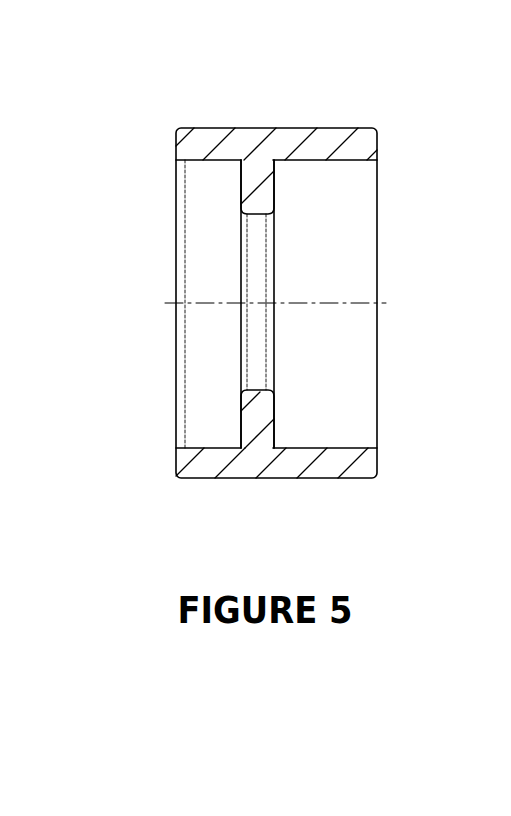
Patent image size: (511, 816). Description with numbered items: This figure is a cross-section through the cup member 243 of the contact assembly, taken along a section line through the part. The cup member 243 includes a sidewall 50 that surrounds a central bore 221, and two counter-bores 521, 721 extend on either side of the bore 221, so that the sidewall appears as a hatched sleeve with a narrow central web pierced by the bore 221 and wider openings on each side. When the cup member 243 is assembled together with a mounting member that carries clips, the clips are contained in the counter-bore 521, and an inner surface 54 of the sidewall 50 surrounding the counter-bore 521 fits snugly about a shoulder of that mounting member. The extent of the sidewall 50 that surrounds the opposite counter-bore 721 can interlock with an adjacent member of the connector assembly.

The sidewall 50 is at (258, 129).
The cup member 243 is at (337, 103).
The inner surface 54 is at (330, 172).
The counter-bore 521 is at (355, 190).
The counter-bore 721 is at (190, 183).
The bore 221 is at (255, 352).